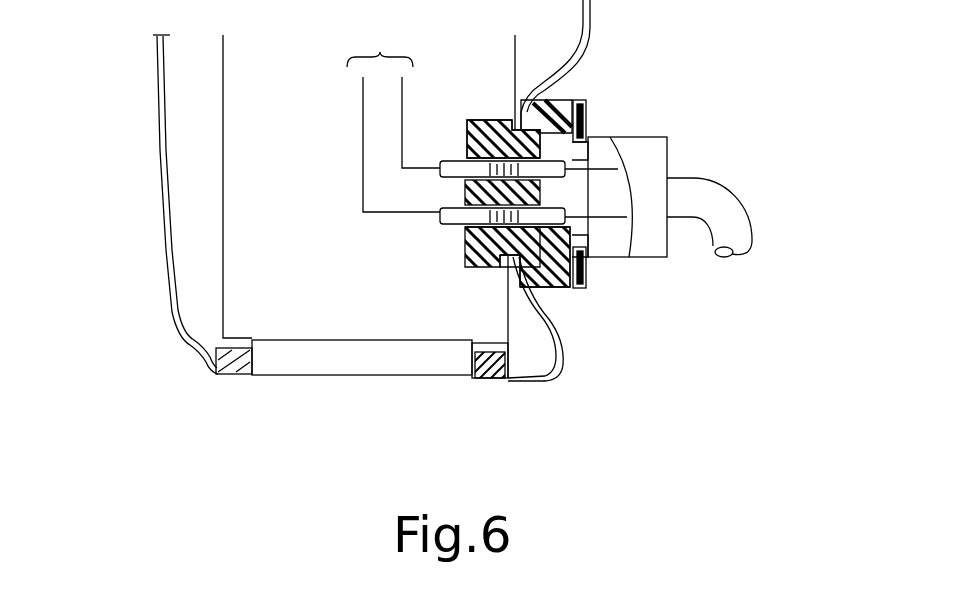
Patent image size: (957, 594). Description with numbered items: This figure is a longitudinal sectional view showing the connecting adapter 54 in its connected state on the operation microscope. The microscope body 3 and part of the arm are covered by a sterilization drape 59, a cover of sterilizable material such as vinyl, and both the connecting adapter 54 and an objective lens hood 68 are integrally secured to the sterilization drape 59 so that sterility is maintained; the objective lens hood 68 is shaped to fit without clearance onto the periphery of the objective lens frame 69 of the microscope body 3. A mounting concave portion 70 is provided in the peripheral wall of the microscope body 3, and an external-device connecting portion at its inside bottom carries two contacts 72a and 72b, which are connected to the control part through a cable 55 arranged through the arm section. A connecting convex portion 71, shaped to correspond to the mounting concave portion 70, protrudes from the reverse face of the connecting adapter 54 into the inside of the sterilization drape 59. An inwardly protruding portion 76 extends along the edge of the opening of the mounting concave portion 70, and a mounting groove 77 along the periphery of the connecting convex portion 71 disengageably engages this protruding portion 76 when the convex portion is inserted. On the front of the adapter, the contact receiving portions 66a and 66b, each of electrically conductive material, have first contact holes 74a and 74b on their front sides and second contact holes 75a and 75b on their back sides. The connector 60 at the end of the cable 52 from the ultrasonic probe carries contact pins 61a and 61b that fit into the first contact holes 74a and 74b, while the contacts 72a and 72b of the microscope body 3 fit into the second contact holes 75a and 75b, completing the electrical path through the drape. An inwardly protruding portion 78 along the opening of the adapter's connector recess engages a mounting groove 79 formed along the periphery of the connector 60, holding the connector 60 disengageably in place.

The microscope body 3 is at (222, 143).
The sterilization drape 59 is at (168, 292).
The cable 55 is at (393, 117).
The contact receiving portion 66a is at (467, 158).
The contact 72a is at (437, 164).
The contact receiving portion 66b is at (462, 204).
The contact 72b is at (440, 221).
The second contact hole 75a is at (488, 120).
The second contact hole 75b is at (463, 262).
The mounting concave portion 70 is at (456, 272).
The connecting convex portion 71 is at (488, 265).
The objective lens hood 68 is at (235, 370).
The objective lens frame 69 is at (297, 362).
The inwardly protruding portion 76 is at (542, 380).
The mounting groove 77 is at (545, 302).
The first contact hole 74a is at (533, 100).
The first contact hole 74b is at (553, 272).
The connecting adapter 54 is at (572, 103).
The inwardly protruding portion 78 is at (603, 117).
The mounting groove 79 is at (583, 272).
The contact pin 61a is at (583, 163).
The contact pin 61b is at (573, 228).
The connector 60 is at (660, 165).
The cable 52 is at (748, 233).